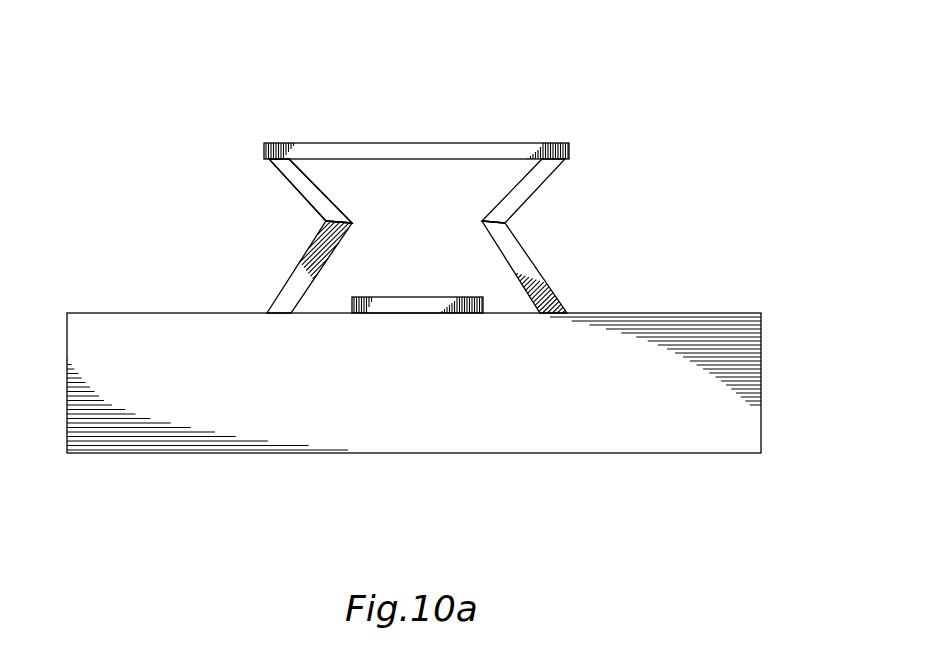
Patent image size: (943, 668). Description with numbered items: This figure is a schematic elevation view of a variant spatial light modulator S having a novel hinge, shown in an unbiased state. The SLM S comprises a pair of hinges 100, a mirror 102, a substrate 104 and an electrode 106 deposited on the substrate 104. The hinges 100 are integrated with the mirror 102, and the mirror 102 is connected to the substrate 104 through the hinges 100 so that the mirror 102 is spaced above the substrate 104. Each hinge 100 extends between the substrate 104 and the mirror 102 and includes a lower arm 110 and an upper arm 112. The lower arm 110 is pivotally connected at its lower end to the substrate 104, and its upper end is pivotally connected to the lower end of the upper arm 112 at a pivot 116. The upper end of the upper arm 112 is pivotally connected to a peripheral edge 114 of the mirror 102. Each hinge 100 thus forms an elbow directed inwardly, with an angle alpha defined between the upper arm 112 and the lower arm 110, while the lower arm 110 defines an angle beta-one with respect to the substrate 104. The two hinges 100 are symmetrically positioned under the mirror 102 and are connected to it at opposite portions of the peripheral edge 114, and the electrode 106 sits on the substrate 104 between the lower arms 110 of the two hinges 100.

The variant SLM S is at (128, 128).
The hinge 100 is at (271, 167).
The mirror 102 is at (392, 150).
The substrate 104 is at (737, 360).
The electrode 106 is at (413, 305).
The lower arm 110 is at (298, 287).
The upper arm 112 is at (309, 183).
The peripheral edge 114 is at (264, 150).
The pivot 116 is at (503, 210).